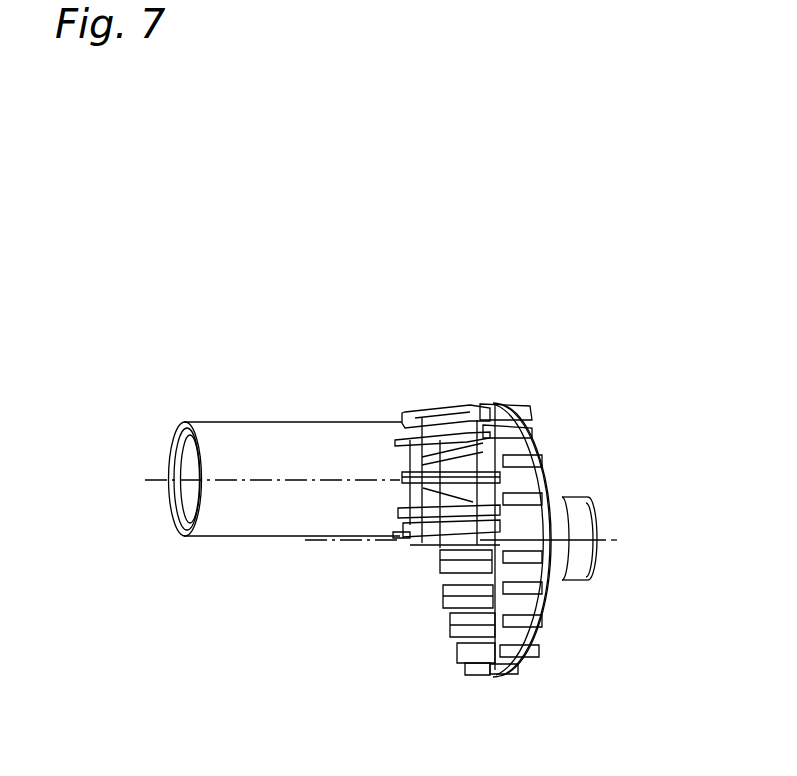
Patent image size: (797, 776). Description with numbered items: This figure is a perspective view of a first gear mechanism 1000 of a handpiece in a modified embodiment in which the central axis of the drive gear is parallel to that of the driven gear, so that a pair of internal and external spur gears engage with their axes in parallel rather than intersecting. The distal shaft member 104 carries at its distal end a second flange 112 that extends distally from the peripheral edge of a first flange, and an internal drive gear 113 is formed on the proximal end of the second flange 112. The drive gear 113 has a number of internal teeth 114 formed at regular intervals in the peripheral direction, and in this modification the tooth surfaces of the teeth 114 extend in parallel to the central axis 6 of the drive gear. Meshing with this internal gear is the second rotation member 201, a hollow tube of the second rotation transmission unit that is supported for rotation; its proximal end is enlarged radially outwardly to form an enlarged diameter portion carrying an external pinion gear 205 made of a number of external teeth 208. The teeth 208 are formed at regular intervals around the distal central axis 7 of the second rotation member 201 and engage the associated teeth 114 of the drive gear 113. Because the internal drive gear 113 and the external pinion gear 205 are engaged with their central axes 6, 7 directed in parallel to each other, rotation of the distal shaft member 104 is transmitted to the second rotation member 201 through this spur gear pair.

The rotary gear assembly 1000 is at (493, 270).
The drive gear 113 is at (556, 306).
The teeth 114 is at (510, 400).
The teeth 208 is at (435, 402).
The second rotation member 201 is at (322, 422).
The second flange 112 is at (548, 443).
The distal shaft member 104 is at (577, 497).
The rotation axis of gear 6 is at (605, 541).
The distal central axis 7 is at (225, 480).
The pinion gear 205 is at (410, 552).